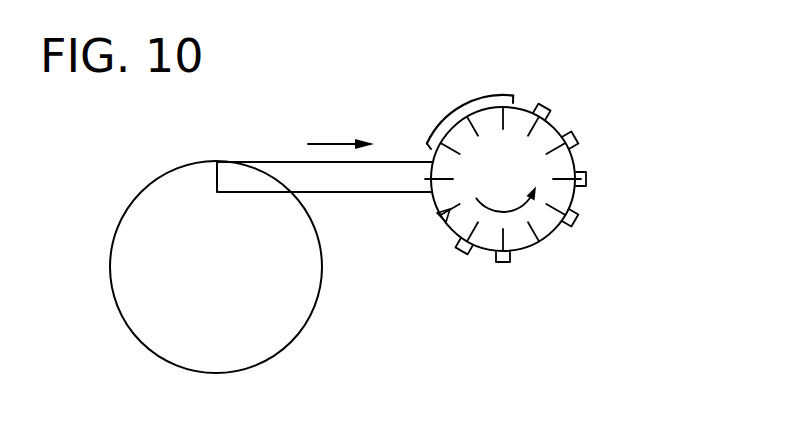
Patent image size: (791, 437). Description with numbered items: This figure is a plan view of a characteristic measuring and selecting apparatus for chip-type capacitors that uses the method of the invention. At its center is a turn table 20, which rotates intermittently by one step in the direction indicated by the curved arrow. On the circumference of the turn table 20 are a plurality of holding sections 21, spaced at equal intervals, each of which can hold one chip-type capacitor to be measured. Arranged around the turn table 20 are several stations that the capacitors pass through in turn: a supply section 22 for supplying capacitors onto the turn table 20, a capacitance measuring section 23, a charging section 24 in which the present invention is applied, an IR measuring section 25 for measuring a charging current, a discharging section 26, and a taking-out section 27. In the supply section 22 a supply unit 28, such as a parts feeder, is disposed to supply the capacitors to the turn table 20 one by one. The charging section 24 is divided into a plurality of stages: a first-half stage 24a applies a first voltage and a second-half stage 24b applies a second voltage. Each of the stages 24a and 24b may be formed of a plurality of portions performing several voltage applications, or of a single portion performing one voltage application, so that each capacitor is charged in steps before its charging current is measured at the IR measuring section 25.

The turn table 20 is at (456, 131).
The holding section 21 is at (450, 222).
The supply section 22 is at (430, 159).
The capacitance measuring section 23 is at (465, 254).
The charging section 24 is at (582, 241).
The first-half stage 24a is at (537, 278).
The second-half stage 24b is at (589, 187).
The IR measuring section 25 is at (578, 135).
The discharging section 26 is at (548, 102).
The taking-out section 27 is at (471, 97).
The supply unit 28 is at (133, 320).